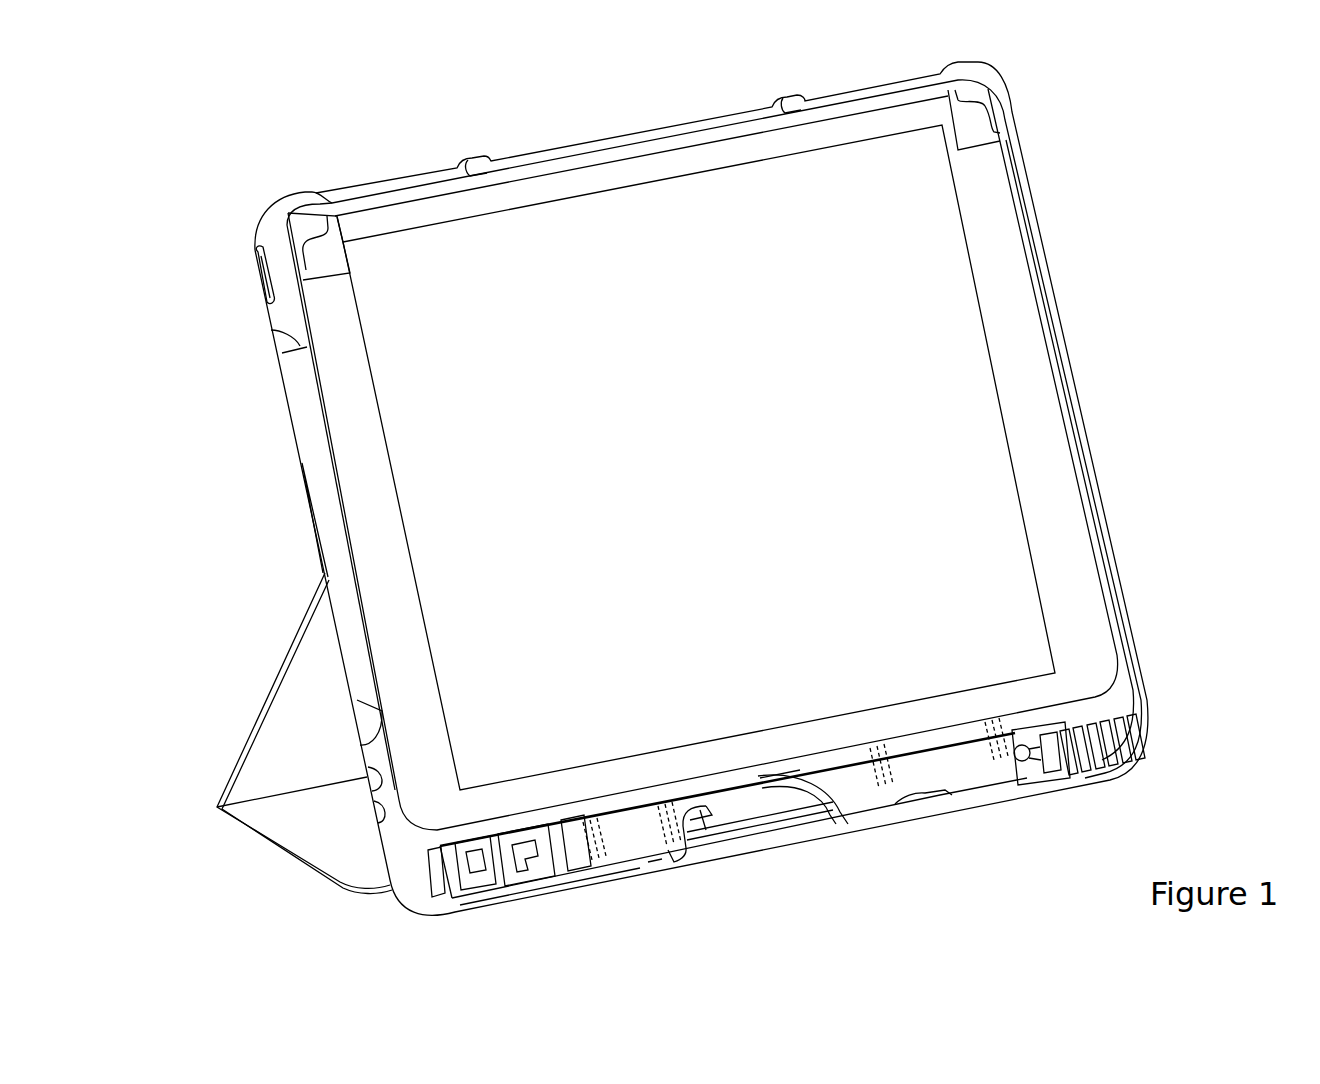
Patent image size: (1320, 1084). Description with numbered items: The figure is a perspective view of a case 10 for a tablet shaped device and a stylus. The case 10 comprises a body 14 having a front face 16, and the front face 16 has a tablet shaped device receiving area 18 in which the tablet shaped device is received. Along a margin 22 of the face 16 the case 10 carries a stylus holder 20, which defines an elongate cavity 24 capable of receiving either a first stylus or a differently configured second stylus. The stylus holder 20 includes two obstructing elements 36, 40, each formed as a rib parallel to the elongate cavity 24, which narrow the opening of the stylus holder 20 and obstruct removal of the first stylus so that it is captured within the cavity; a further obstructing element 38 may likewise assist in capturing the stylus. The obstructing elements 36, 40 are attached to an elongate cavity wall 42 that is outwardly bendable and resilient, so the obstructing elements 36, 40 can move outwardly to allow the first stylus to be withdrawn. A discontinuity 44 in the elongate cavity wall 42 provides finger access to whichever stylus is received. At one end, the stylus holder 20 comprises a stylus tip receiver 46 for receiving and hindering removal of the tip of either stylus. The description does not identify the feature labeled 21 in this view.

The case 10 is at (220, 189).
The body 14 is at (287, 302).
The front face 16 is at (986, 227).
The tablet shaped device receiving area 18 is at (622, 406).
The stylus holder 20 is at (970, 775).
The channel 21 is at (628, 846).
The margin 22 is at (1050, 688).
The elongate cavity 24 is at (667, 843).
The obstructing element 36 is at (633, 857).
The obstructing element 38 is at (768, 777).
The obstructing element 40 is at (930, 797).
The elongate cavity wall 42 is at (865, 817).
The discontinuity 44 is at (707, 818).
The stylus tip receiver 46 is at (1025, 770).